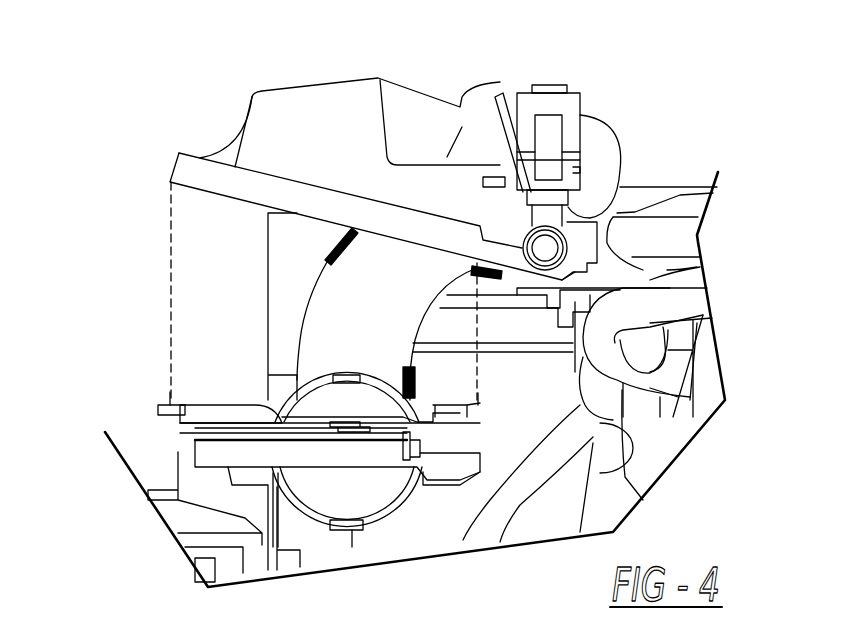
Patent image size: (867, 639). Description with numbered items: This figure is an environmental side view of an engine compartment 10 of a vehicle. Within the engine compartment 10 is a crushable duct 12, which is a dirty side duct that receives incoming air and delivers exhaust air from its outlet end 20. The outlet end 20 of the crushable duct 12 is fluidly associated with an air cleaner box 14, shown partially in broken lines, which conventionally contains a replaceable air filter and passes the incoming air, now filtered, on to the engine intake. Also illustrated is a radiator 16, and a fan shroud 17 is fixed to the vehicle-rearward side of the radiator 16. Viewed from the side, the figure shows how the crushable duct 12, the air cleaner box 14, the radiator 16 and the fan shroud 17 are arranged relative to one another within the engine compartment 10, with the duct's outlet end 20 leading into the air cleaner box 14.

The engine compartment 10 is at (140, 225).
The crushable duct 12 is at (345, 332).
The air cleaner box 14 is at (338, 100).
The radiator 16 is at (633, 197).
The fan shroud 17 is at (530, 383).
The outlet end 20 is at (367, 487).